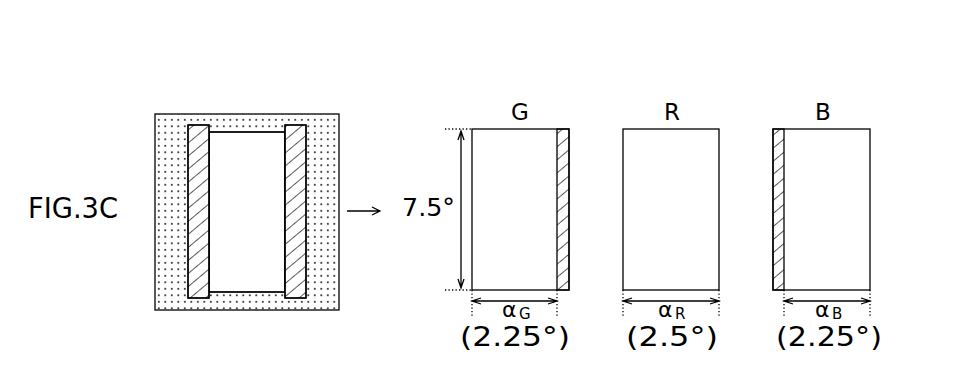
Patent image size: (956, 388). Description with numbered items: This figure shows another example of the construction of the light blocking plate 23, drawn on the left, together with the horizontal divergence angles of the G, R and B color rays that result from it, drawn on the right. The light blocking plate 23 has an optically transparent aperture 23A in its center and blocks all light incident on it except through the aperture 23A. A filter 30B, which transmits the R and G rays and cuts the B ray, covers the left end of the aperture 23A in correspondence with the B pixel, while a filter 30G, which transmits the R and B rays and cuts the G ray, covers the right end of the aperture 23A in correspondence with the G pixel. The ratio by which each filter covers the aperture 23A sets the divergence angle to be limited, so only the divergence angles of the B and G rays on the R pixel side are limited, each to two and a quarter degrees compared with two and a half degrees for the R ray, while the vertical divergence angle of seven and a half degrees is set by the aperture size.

The light blocking plate 23 is at (323, 114).
The aperture 23A is at (240, 132).
The filter 30B is at (192, 125).
The filter 30G is at (297, 125).